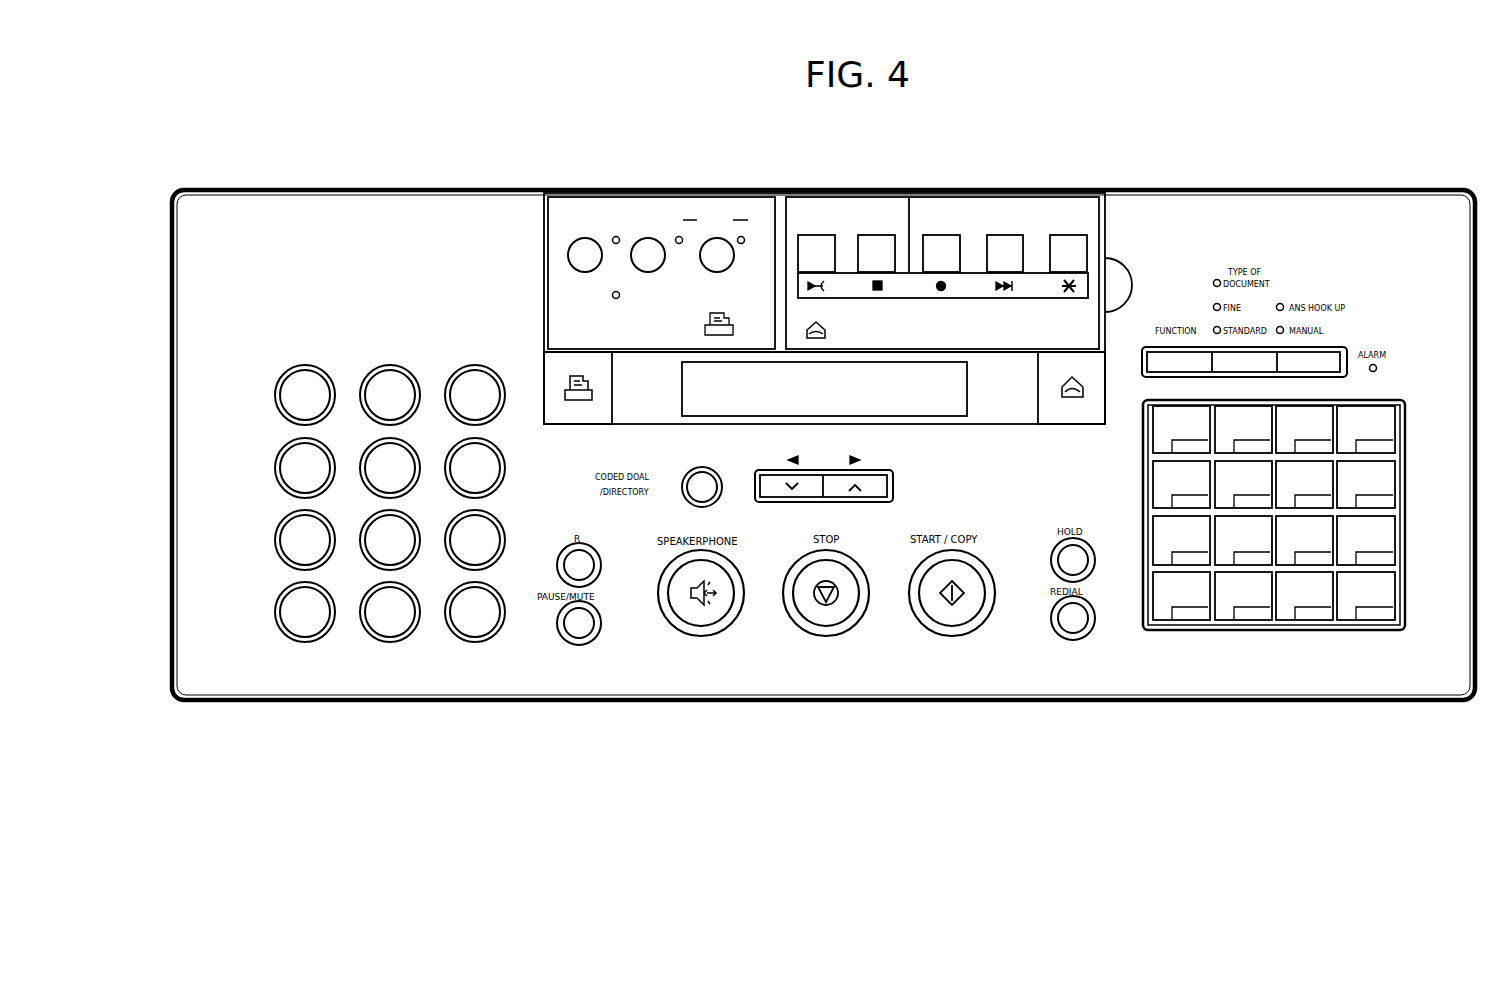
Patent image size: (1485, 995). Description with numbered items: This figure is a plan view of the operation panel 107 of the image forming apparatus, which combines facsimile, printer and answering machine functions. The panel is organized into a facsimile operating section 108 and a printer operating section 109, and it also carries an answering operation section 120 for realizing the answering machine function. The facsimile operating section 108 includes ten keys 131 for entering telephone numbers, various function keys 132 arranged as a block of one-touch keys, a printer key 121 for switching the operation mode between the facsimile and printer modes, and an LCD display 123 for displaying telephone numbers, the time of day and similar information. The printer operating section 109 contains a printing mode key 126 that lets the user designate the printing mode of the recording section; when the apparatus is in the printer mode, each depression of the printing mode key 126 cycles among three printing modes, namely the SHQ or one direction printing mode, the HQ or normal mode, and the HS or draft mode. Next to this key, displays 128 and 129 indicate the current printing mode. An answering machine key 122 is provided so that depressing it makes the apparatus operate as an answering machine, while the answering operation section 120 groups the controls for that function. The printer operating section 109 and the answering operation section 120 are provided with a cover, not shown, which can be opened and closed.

The operation panel 107 is at (1413, 123).
The facsimile operating section 108 is at (1233, 684).
The printer operating section 109 is at (662, 244).
The answering operation section 120 is at (1105, 175).
The printer key 121 is at (573, 421).
The answering machine key 122 is at (1062, 421).
The LCD display 123 is at (909, 411).
The printing mode key 126 is at (726, 263).
The display 128 is at (679, 244).
The display 129 is at (743, 243).
The ten keys 131 is at (507, 653).
The function keys 132 is at (1405, 645).